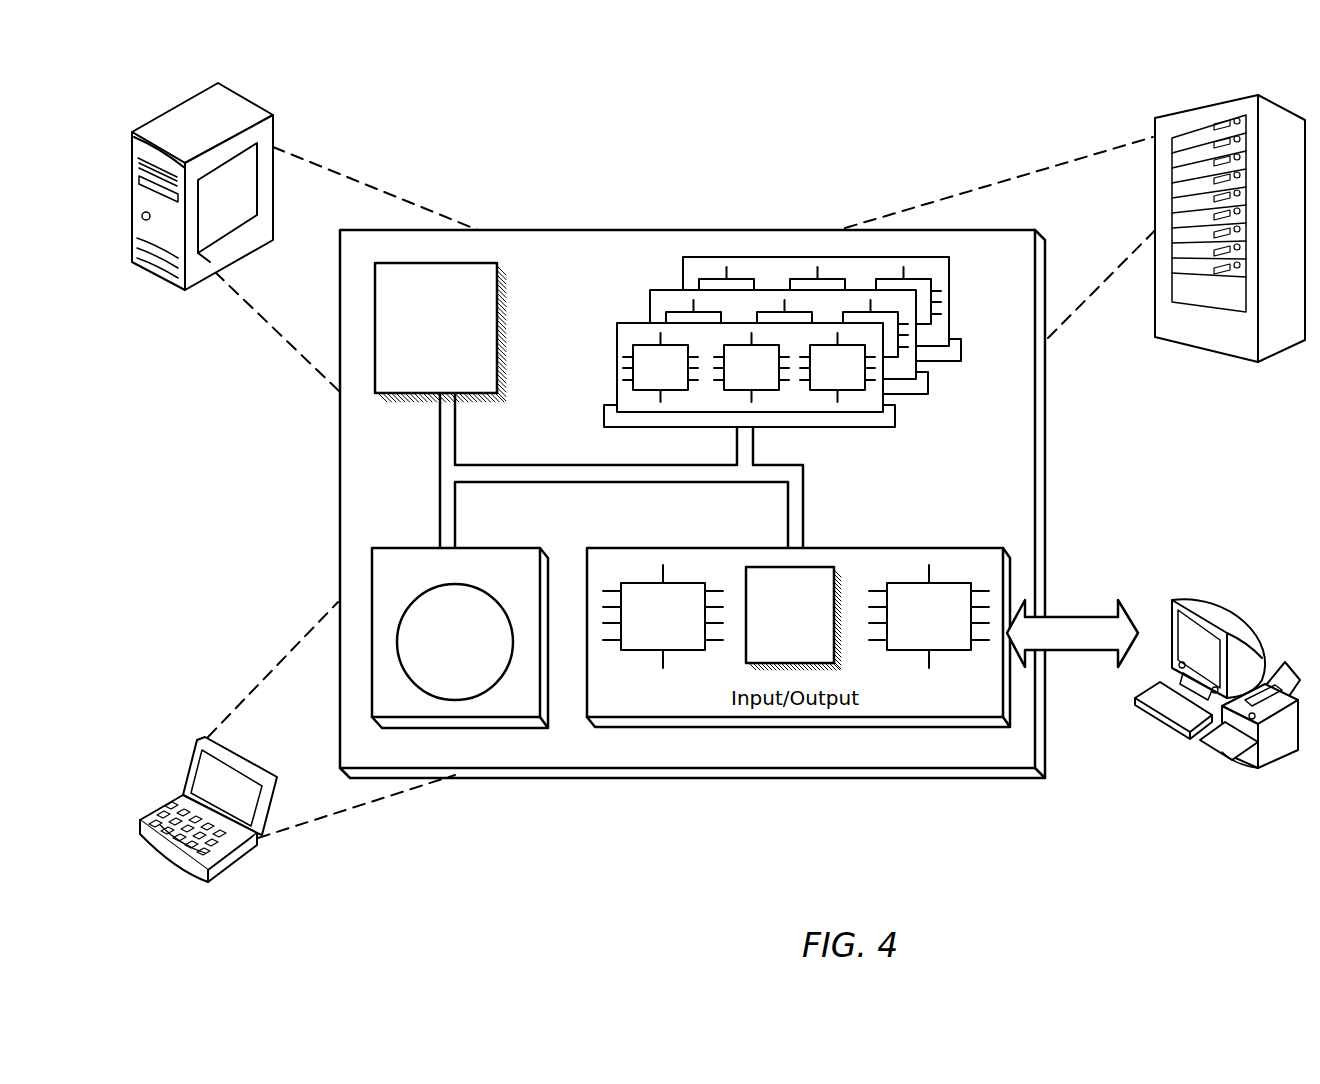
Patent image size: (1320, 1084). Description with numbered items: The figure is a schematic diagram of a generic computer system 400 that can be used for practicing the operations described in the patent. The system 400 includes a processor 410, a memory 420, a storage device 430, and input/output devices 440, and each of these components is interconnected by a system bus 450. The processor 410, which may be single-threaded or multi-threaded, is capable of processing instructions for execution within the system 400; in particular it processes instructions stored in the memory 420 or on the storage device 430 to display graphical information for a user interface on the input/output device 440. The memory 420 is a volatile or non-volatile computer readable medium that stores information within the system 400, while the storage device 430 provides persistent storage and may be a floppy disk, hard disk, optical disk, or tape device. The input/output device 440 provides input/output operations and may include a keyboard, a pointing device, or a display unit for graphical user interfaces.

The generic computer system 400 is at (447, 90).
The processor 410 is at (440, 332).
The memory 420 is at (953, 392).
The storage device 430 is at (460, 638).
The input/output devices 440 is at (1168, 606).
The system bus 450 is at (619, 483).